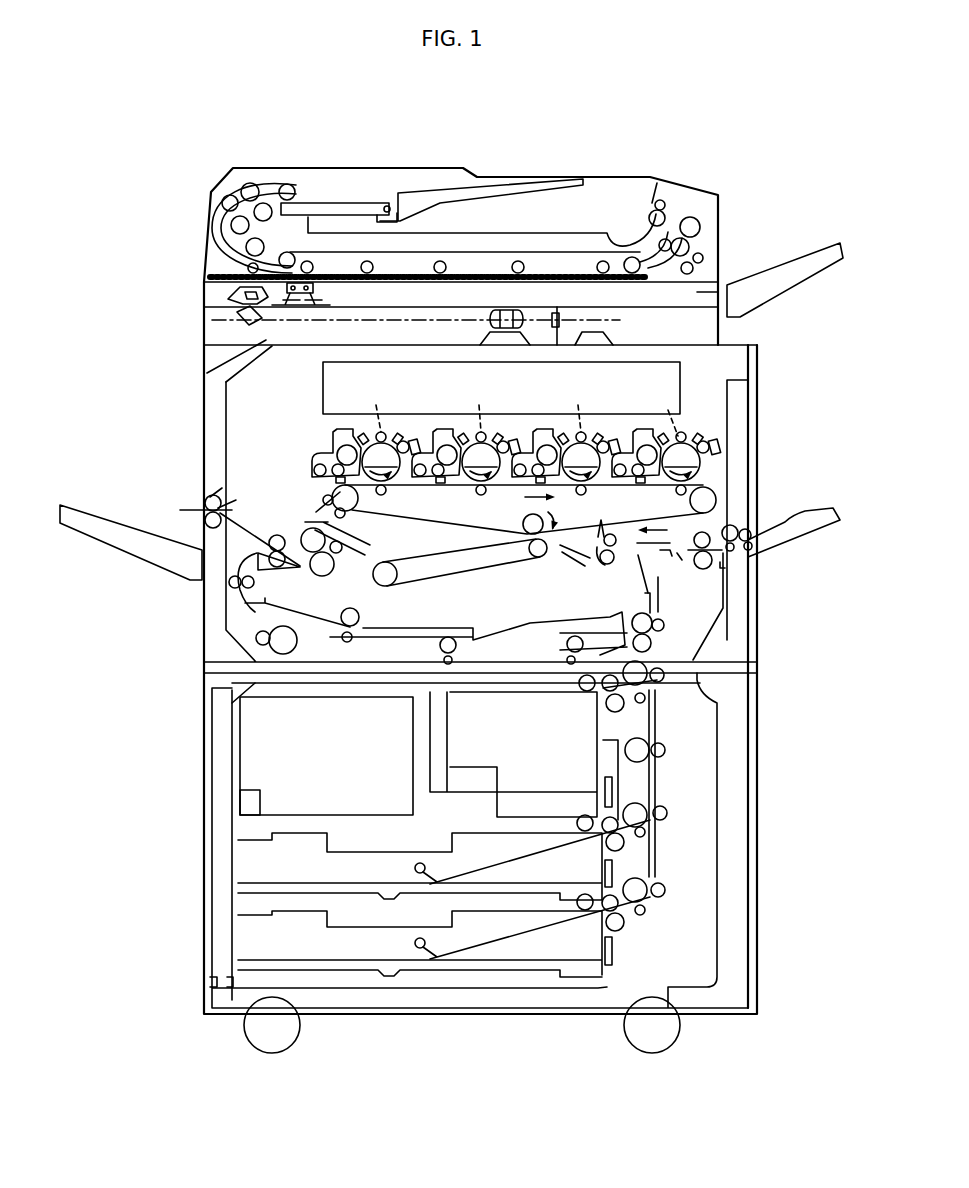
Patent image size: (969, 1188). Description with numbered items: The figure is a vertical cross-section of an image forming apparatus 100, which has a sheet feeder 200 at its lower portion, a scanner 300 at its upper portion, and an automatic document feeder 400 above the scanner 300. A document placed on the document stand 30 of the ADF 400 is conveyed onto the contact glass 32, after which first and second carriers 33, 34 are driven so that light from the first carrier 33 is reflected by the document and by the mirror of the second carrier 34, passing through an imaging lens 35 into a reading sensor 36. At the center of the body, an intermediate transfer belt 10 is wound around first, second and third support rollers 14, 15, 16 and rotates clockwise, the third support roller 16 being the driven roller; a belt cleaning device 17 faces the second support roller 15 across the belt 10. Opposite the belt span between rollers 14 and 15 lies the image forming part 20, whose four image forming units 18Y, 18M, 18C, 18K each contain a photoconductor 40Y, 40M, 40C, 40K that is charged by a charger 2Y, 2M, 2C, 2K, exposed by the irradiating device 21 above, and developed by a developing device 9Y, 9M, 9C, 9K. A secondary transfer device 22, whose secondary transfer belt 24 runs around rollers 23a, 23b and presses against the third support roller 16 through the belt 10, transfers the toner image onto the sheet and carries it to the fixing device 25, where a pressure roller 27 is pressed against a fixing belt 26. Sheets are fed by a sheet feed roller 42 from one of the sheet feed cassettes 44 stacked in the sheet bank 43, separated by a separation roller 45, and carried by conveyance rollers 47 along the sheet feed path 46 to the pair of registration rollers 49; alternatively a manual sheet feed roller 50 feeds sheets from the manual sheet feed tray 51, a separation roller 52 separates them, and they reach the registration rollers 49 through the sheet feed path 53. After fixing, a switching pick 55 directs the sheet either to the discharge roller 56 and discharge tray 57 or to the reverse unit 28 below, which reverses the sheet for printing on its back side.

The automatic document feeder (ADF) 400 is at (198, 215).
The scanner 300 is at (190, 298).
The image forming apparatus 100 is at (195, 413).
The sheet feeder 200 is at (183, 758).
The document stand 30 is at (424, 186).
The contact glass 32 is at (562, 252).
The first carrier 33 is at (322, 289).
The second carrier 34 is at (235, 318).
The imaging lens 35 is at (493, 312).
The reading sensor 36 is at (565, 320).
The charger 2Y is at (376, 405).
The charger 2M is at (479, 405).
The charger 2C is at (578, 405).
The charger 2K is at (672, 412).
The irradiating device 21 is at (682, 378).
The image forming part 20 is at (318, 440).
The developing device 9Y is at (350, 430).
The developing device 9M is at (450, 430).
The developing device 9C is at (553, 430).
The developing device 9K is at (652, 430).
The image forming unit 18Y is at (388, 420).
The image forming unit 18M is at (488, 420).
The image forming unit 18C is at (588, 420).
The image forming unit 18K is at (702, 422).
The photoconductor 40Y is at (381, 462).
The photoconductor 40M is at (481, 462).
The photoconductor 40C is at (580, 462).
The photoconductor 40K is at (682, 462).
The intermediate transfer belt 10 is at (432, 521).
The first support roller 14 is at (715, 495).
The second support roller 15 is at (347, 509).
The third support roller 16 is at (524, 520).
The belt cleaning device 17 is at (316, 495).
The fixing belt 26 is at (318, 500).
The secondary transfer device 22 is at (557, 550).
The roller 23a is at (537, 558).
The roller 23b is at (394, 580).
The secondary transfer belt 24 is at (468, 573).
The fixing device 25 is at (266, 586).
The pressure roller 27 is at (332, 572).
The pair of registration rollers 49 is at (604, 533).
The manual sheet feed roller 50 is at (738, 534).
The manual sheet feed tray 51 is at (795, 545).
The separation roller 52 is at (709, 566).
The sheet feed path 53 is at (657, 555).
The switching pick 55 is at (271, 536).
The discharge roller 56 is at (210, 495).
The discharge tray 57 is at (144, 551).
The reverse unit 28 is at (483, 672).
The sheet feed roller 42 is at (580, 687).
The sheet bank 43 is at (231, 882).
The sheet feed cassette 44 is at (300, 839).
The separation roller 45 is at (607, 708).
The sheet feed path 46 is at (657, 782).
The conveyance roller 47 is at (666, 750).